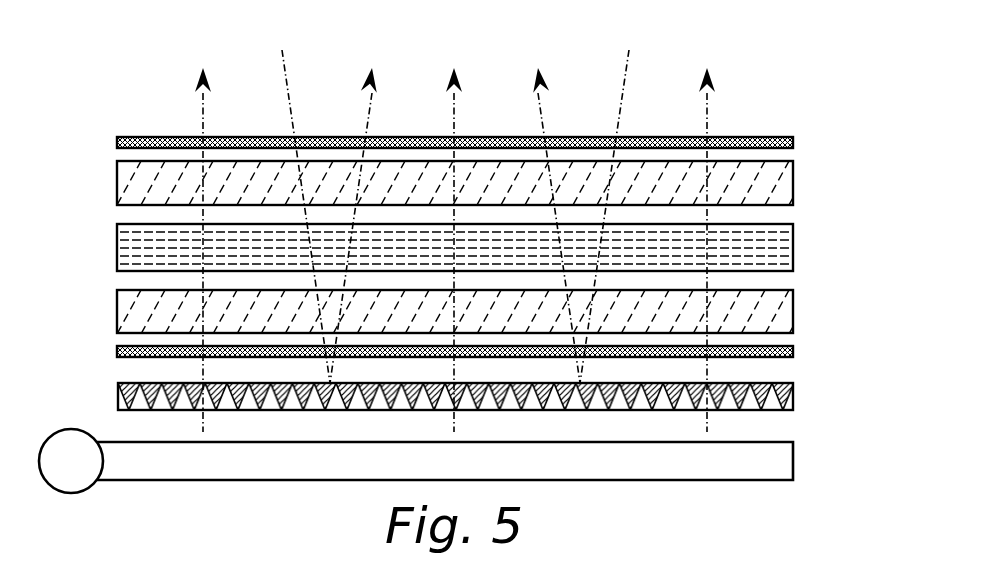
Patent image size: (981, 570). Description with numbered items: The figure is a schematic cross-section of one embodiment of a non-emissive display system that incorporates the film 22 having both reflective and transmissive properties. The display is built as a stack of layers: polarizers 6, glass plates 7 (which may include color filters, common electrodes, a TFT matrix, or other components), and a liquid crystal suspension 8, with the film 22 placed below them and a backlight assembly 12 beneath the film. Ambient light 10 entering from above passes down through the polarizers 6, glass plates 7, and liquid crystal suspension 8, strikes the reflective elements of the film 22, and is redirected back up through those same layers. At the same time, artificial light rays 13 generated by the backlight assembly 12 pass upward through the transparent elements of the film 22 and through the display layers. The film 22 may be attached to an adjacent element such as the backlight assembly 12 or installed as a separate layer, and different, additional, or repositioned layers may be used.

The polarizers 6 is at (117, 147).
The glass plates 7 is at (117, 198).
The liquid crystal suspension 8 is at (117, 258).
The ambient light 10 is at (625, 92).
The backlight assembly 12 is at (153, 482).
The artificial light rays 13 is at (707, 113).
The film 22 is at (118, 394).